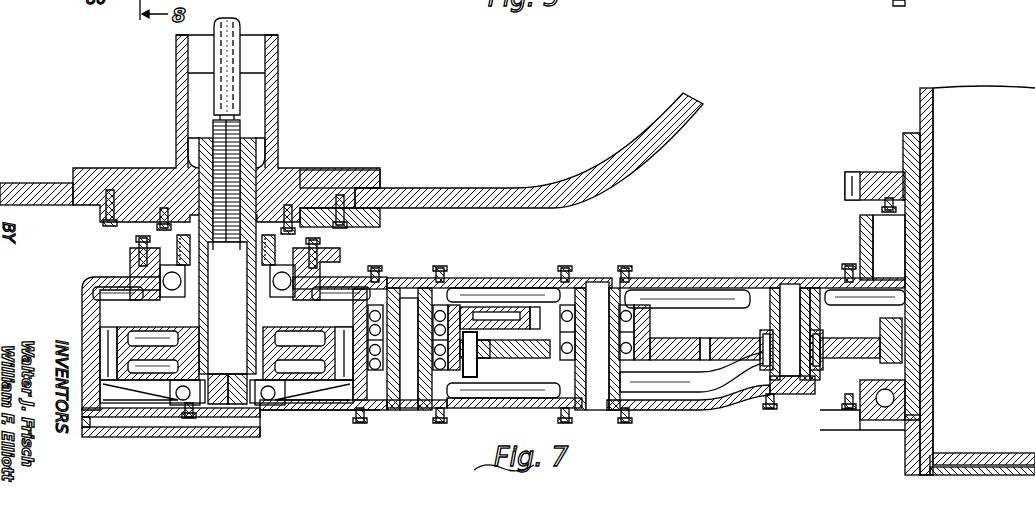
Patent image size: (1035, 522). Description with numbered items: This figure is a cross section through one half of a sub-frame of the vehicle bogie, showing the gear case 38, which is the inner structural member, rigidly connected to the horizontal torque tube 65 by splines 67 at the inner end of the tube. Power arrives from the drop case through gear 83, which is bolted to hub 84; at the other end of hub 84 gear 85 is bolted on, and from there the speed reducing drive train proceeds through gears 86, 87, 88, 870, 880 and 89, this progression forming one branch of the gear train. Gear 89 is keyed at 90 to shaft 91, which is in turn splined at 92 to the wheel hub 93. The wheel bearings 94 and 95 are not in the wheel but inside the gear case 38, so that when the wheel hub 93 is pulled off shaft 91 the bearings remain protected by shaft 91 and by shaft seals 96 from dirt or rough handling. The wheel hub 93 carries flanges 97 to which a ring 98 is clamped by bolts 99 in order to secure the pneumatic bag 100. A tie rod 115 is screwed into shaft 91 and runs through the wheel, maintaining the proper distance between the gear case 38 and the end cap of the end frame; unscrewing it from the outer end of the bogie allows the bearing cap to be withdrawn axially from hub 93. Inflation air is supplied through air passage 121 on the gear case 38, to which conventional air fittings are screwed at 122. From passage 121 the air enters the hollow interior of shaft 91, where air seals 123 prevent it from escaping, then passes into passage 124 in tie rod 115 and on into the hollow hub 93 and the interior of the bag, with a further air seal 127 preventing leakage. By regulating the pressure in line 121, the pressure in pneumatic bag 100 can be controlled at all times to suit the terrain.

The gear case 38 is at (715, 398).
The horizontal torque tube 65 is at (921, 111).
The splines 67 is at (910, 448).
The gear 83 is at (863, 173).
The hub 84 is at (905, 136).
The gear 85 is at (889, 348).
The gear 86 is at (836, 346).
The gear 87 is at (681, 340).
The gear 88 is at (495, 310).
The gear 89 is at (331, 400).
The key 90 is at (196, 340).
The shaft 91 is at (206, 405).
The splines 92 is at (200, 152).
The wheel hub 93 is at (140, 170).
The wheel bearing 94 is at (163, 280).
The wheel bearing 95 is at (278, 405).
The shaft seals 96 is at (177, 245).
The flanges 97 is at (371, 172).
The ring 98 is at (380, 218).
The bolts 99 is at (342, 228).
The pneumatic bag 100 is at (414, 190).
The tie rod 115 is at (243, 30).
The air passage 121 is at (158, 425).
The air fitting location 122 is at (88, 427).
The air seals 123 is at (243, 405).
The passage 124 is at (228, 255).
The air seal 127 is at (265, 208).
The gear 870 is at (642, 310).
The gear 880 is at (478, 369).